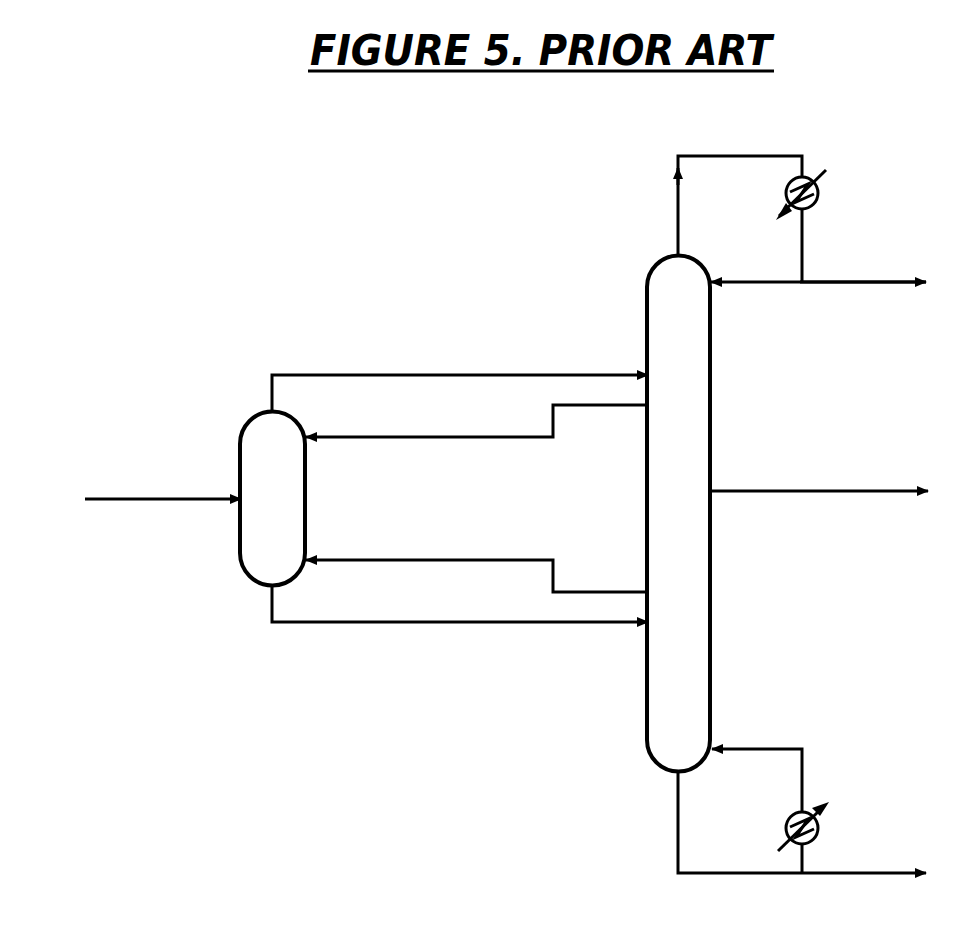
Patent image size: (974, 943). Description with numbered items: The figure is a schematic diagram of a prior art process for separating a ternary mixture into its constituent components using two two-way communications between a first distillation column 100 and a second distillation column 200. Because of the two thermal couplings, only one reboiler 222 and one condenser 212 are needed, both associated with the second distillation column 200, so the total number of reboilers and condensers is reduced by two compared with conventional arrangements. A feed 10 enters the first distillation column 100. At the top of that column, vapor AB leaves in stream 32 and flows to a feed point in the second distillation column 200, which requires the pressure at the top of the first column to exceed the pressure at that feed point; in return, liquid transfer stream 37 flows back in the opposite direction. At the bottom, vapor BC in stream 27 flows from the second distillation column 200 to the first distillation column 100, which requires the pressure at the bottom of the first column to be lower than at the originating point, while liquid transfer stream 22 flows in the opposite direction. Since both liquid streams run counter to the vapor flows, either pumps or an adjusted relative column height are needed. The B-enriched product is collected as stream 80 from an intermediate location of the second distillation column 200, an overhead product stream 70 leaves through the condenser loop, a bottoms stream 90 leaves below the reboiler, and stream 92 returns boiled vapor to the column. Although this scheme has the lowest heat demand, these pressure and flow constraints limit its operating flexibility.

The feed stream ABC 10 is at (142, 501).
The stream 32 is at (496, 372).
The liquid transfer stream 37 is at (496, 440).
The stream 27 is at (496, 562).
The liquid transfer stream 22 is at (496, 624).
The first distillation column 100 is at (312, 520).
The second distillation column 200 is at (712, 623).
The product A overhead stream 70 is at (845, 281).
The stream 80 is at (796, 490).
The product C bottoms stream 90 is at (846, 875).
The reboiler return stream 92 is at (752, 748).
The condenser 212 is at (820, 184).
The reboiler 222 is at (820, 826).